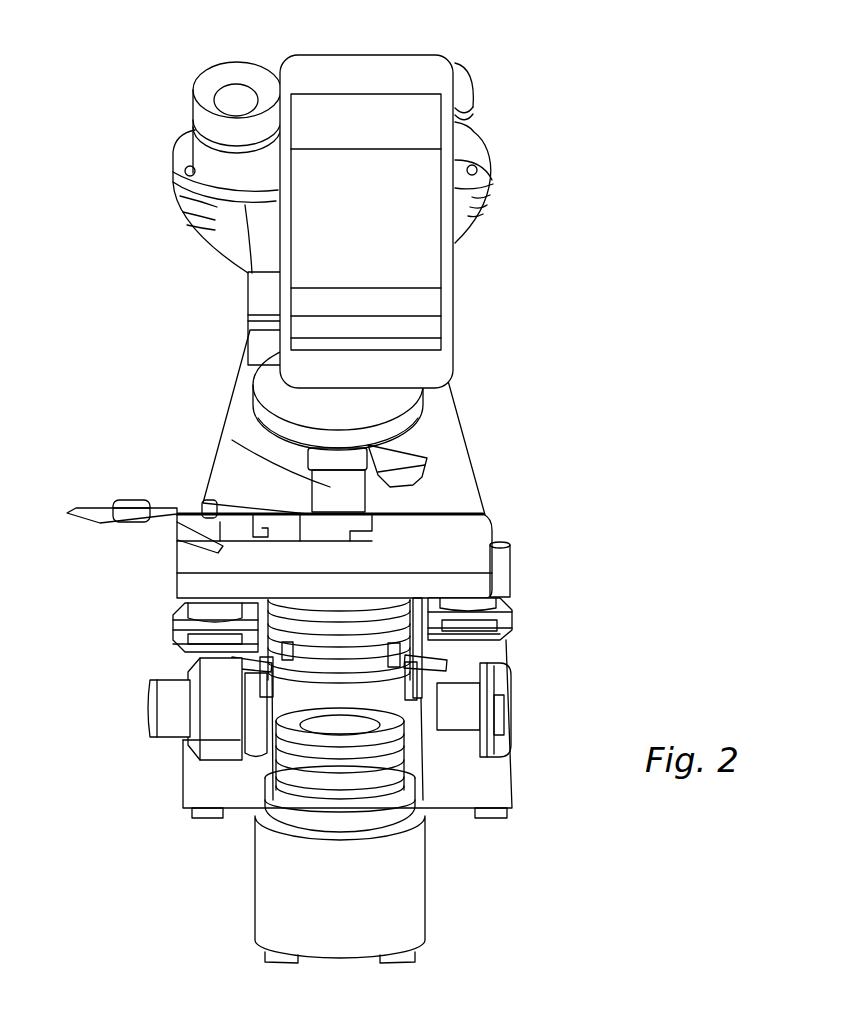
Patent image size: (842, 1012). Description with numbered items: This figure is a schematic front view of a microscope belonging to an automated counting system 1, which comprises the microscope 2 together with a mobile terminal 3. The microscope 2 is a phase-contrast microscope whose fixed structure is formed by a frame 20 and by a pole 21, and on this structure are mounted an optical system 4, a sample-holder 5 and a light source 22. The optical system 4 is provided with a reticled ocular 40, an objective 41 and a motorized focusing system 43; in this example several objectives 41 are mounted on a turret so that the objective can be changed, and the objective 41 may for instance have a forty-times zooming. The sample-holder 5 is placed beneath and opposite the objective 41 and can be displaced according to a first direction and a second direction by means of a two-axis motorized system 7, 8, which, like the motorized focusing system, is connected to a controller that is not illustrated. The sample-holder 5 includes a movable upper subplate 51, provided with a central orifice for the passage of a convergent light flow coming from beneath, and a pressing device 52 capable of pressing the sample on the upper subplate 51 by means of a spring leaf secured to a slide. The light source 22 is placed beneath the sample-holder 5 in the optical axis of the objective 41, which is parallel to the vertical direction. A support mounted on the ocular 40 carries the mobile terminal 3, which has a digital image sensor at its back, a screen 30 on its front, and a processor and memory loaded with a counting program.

The automated counting system 1 is at (321, 481).
The microscope 2 is at (498, 428).
The mobile terminal 3 is at (362, 194).
The screen 30 is at (360, 117).
The reticled ocular 40 is at (460, 140).
The optical system 4 is at (246, 315).
The pole 21 is at (245, 418).
The objective 41 is at (328, 487).
The pressing device 52 is at (262, 528).
The sample-holder 5 is at (382, 543).
The movable upper subplate 51 is at (457, 551).
The two-axis motorized system 7 is at (160, 634).
The two-axis motorized system 8 is at (526, 620).
The motorized focusing system 43 is at (500, 713).
The frame 20 is at (490, 783).
The light source 22 is at (380, 816).